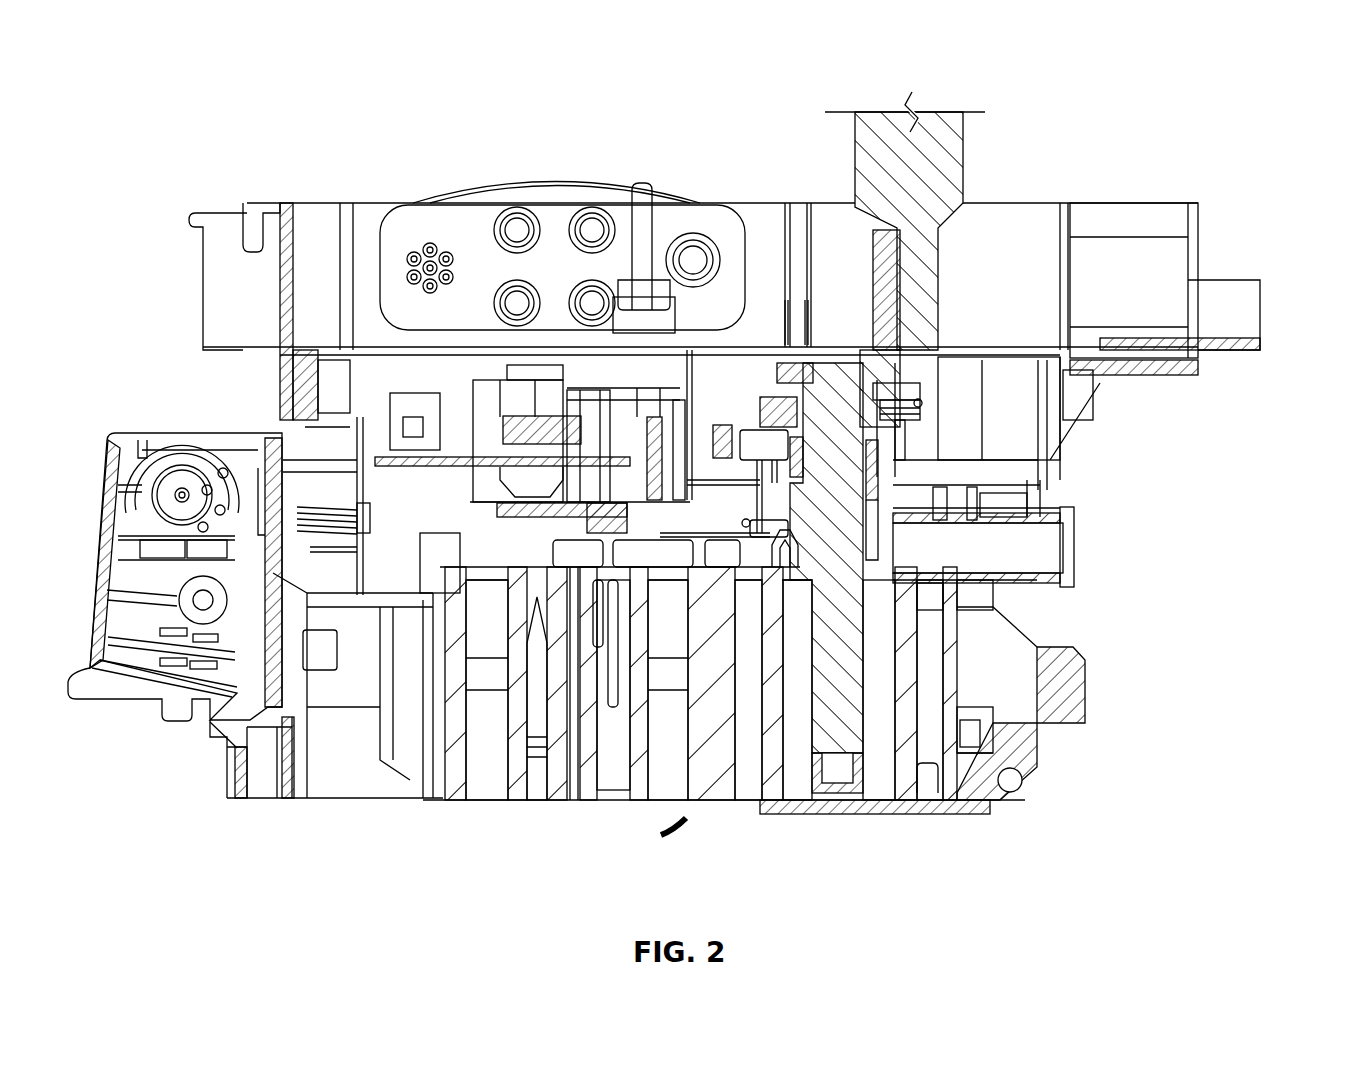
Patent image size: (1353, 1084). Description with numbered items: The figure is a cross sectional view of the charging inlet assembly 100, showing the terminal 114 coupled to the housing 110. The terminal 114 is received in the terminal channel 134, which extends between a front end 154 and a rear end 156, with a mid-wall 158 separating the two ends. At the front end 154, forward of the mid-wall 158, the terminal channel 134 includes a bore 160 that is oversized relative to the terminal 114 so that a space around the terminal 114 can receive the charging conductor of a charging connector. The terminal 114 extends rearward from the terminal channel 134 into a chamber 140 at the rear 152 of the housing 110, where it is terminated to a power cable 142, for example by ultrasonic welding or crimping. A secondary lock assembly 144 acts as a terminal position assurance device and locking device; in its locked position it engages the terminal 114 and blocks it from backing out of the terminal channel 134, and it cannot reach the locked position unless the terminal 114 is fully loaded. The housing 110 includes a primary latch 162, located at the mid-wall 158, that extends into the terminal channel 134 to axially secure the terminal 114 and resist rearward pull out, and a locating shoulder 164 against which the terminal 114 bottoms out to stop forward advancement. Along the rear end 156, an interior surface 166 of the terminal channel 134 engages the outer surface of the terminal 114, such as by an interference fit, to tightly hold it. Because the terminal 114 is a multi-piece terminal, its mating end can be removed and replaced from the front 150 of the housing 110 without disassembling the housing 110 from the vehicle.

The charging inlet assembly 100 is at (505, 75).
The housing 110 is at (456, 800).
The terminal 114 is at (822, 730).
The terminal channel 134 is at (878, 764).
The chamber 140 is at (1013, 395).
The power cable 142 is at (930, 133).
The secondary lock assembly 144 is at (924, 414).
The front 150 is at (558, 800).
The rear 152 is at (1262, 345).
The front end 154 is at (903, 800).
The rear end 156 is at (790, 435).
The mid-wall 158 is at (880, 597).
The bore 160 is at (876, 701).
The primary latch 162 is at (795, 565).
The locating shoulder 164 is at (877, 540).
The interior surface 166 is at (880, 507).